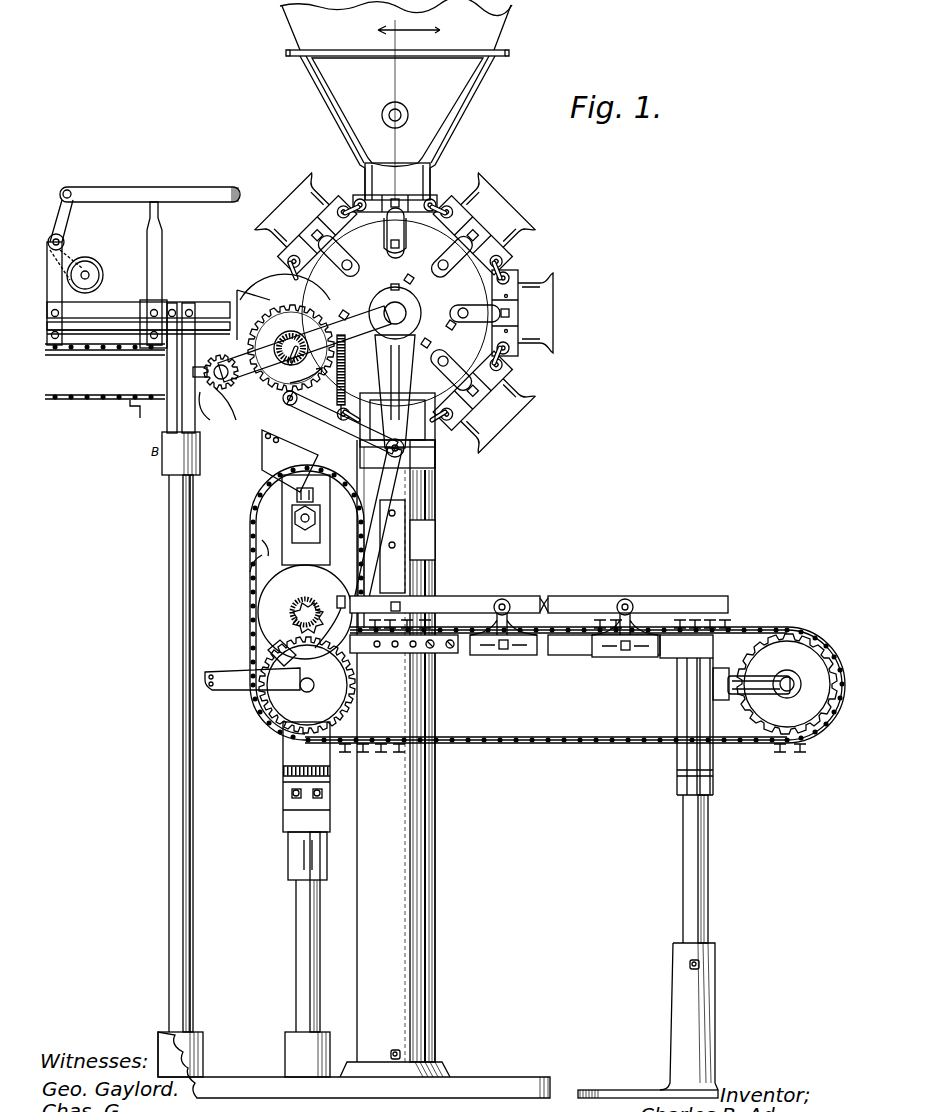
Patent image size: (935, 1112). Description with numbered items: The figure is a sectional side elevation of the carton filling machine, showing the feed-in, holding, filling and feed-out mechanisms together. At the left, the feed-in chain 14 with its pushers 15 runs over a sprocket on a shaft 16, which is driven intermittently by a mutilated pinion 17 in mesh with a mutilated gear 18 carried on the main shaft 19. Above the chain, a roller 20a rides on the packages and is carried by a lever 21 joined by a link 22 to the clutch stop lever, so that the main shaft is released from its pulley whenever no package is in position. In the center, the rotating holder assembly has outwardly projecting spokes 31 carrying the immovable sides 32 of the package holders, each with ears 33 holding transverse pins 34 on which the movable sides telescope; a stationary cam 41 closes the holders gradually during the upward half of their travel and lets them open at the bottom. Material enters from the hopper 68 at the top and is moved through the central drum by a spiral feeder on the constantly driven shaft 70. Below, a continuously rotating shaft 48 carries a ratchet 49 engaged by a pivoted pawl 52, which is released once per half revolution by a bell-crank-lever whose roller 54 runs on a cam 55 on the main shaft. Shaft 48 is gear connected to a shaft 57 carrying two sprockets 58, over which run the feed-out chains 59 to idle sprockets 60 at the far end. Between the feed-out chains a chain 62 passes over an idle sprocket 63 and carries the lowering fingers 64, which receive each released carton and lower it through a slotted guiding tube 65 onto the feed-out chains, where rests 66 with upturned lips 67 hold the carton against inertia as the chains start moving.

The feed-in chain 14 is at (80, 352).
The pushers 15 is at (232, 320).
The shaft 16 is at (193, 372).
The mutilated pinion 17 is at (217, 413).
The mutilated gear 18 is at (270, 296).
The main shaft 19 is at (286, 342).
The roller 20a is at (108, 240).
The lever 21 is at (70, 225).
The link 22 is at (128, 185).
The spokes 31 is at (500, 408).
The immovable sides 32 is at (553, 315).
The ears 33 is at (518, 360).
The transverse pins 34 is at (440, 210).
The cam 41 is at (450, 425).
The shaft 48 is at (318, 600).
The ratchet 49 is at (280, 622).
The pivoted pawl 52 is at (318, 698).
The roller 54 is at (345, 420).
The cam 55 is at (284, 400).
The shaft 57 is at (307, 685).
The sprockets 58 is at (360, 690).
The feed-out chains 59 is at (598, 730).
The idle sprockets 60 is at (707, 866).
The chain 62 is at (250, 568).
The idle sprocket 63 is at (258, 528).
The lowering fingers 64 is at (236, 690).
The guiding tube 65 is at (410, 513).
The rests 66 is at (808, 742).
The upturned lip 67 is at (838, 730).
The hopper 68 is at (396, 100).
The shaft 70 is at (388, 300).